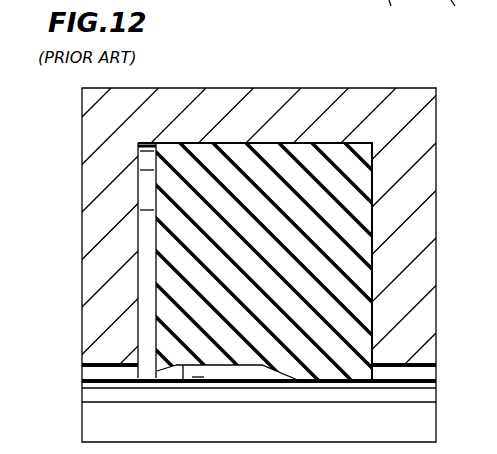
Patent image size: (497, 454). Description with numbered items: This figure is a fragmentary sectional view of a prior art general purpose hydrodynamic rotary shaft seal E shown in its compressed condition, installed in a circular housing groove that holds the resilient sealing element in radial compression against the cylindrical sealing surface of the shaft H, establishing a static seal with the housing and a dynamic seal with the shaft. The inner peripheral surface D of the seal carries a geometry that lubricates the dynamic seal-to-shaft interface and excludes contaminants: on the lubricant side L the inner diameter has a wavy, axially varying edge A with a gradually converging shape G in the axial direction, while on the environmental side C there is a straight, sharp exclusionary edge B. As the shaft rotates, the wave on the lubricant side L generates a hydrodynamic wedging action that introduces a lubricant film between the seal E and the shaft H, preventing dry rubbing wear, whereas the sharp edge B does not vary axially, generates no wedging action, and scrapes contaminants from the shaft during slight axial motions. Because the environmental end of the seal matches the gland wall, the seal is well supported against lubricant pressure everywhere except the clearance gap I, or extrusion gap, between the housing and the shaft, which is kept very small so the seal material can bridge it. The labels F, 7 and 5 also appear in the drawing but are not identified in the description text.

The environmental side C is at (373, 222).
The hydrodynamic rotary shaft seal E is at (173, 182).
The gradually converging shape G is at (257, 368).
The gasket edge F is at (157, 368).
The lubricant side L is at (198, 380).
The clearance gap I is at (427, 373).
The shaft H is at (98, 393).
The wavy, axially varying edge A is at (295, 383).
The inner peripheral surface D is at (337, 383).
The exclusionary edge B is at (377, 384).
The element 7 is at (391, 16).
The element 5 is at (458, 16).